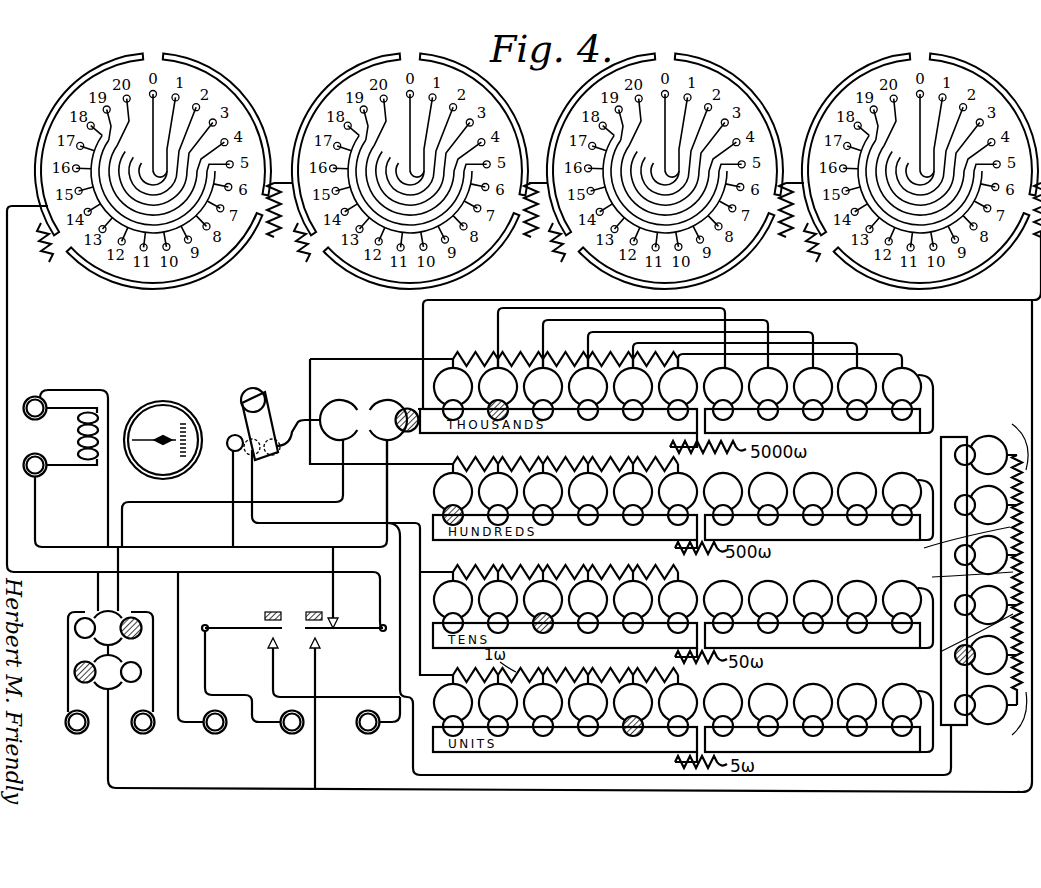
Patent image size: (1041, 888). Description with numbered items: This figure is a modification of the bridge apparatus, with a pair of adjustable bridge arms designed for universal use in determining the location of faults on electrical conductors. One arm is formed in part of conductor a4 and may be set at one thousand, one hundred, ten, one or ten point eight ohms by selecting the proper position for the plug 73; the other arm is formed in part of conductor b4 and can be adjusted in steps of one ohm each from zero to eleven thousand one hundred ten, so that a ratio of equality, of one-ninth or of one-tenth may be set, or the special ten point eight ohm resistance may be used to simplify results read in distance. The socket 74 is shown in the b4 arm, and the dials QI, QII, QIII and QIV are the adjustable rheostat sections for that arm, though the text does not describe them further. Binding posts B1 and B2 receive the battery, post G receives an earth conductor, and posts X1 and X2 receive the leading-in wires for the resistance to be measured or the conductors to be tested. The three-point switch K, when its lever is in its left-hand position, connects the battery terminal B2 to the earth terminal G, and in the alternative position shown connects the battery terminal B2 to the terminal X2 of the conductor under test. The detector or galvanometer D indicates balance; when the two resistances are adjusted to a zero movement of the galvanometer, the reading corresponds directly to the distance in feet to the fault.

The plug 73 is at (955, 662).
The lamp socket 74 is at (412, 408).
The conductor b4 is at (385, 490).
The conductor a4 is at (947, 597).
The detector or galvanometer D is at (170, 404).
The three-point switch K is at (266, 424).
The rheostat dial I QI is at (921, 171).
The rheostat dial II QII is at (670, 171).
The rheostat dial III QIII is at (415, 176).
The rheostat dial IV QIV is at (158, 175).
The post X1 is at (70, 736).
The post X2 is at (136, 736).
The post for attachment of an earth conductor G is at (212, 736).
The binding post B1 is at (288, 736).
The binding post B2 is at (368, 739).